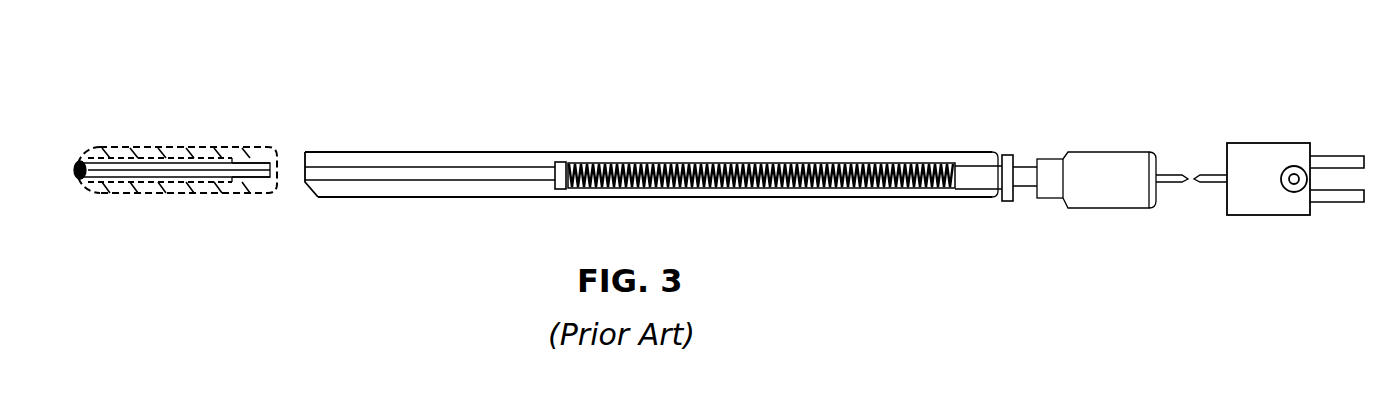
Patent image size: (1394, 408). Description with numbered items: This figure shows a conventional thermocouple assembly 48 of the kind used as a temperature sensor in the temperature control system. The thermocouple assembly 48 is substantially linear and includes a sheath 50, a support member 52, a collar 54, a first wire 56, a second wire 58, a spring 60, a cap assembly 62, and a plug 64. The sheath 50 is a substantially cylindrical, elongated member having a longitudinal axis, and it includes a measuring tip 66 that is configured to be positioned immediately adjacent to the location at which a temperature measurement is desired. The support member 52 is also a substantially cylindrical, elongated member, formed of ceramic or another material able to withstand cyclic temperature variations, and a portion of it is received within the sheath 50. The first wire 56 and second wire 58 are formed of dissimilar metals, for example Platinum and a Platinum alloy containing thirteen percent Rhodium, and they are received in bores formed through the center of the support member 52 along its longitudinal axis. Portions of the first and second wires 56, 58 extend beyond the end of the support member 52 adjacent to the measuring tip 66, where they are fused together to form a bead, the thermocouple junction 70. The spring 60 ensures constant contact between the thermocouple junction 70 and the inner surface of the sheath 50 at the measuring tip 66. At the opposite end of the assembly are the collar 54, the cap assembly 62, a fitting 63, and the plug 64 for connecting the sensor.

The thermocouple assembly 48 is at (728, 90).
The sheath 50 is at (452, 152).
The support member 52 is at (386, 167).
The collar 54 is at (562, 164).
The first wire 56 is at (216, 178).
The second wire 58 is at (215, 190).
The spring 60 is at (780, 166).
The cap assembly 62 is at (1108, 156).
The end fitting 63 is at (1008, 156).
The plug 64 is at (1256, 158).
The measuring tip 66 is at (63, 172).
The thermocouple junction 70 is at (84, 160).